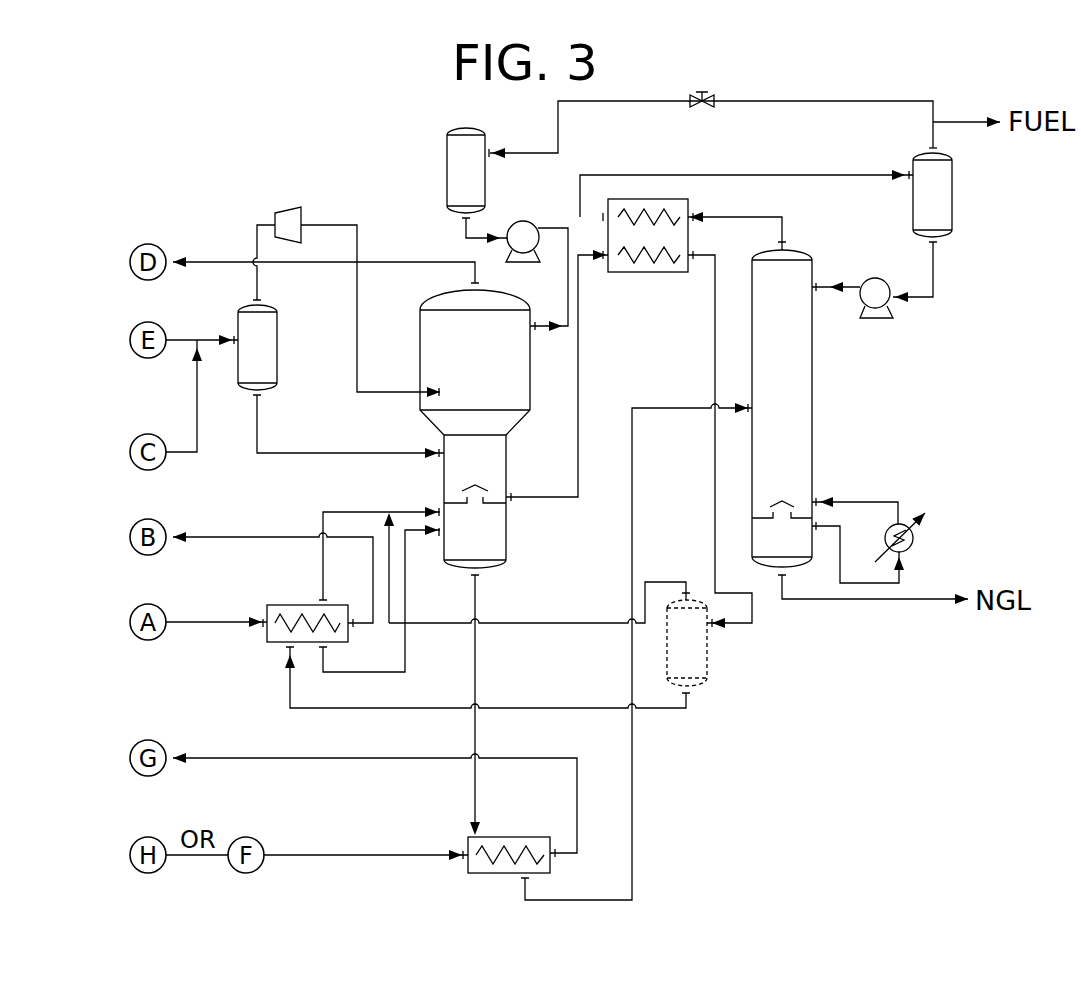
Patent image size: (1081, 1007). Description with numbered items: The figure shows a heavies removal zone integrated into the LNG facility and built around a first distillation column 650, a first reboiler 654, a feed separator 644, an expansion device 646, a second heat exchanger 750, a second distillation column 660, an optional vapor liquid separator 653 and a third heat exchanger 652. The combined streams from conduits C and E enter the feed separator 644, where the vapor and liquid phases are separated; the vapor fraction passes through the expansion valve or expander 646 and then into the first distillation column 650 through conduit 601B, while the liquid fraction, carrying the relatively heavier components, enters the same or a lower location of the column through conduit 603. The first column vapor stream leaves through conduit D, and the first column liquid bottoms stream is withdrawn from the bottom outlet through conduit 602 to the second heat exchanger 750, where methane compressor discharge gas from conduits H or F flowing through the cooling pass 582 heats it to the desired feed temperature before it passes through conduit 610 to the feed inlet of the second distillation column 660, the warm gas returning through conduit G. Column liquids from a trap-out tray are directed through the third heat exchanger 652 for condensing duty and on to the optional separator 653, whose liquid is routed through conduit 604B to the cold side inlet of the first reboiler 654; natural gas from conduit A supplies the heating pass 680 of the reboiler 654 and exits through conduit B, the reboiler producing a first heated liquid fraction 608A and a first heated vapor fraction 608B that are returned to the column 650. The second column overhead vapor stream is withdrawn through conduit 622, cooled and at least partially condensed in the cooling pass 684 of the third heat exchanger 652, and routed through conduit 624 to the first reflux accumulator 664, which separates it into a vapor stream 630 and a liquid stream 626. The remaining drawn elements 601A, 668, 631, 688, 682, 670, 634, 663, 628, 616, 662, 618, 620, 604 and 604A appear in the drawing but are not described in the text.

The expansion device 646 is at (275, 218).
The conduit 601B is at (330, 224).
The gas stream line 601A is at (252, 282).
The feed separator 644 is at (280, 325).
The conduit 603 is at (259, 417).
The first distillation column 650 is at (510, 424).
The conduit 602 is at (476, 588).
The accumulator vessel 668 is at (447, 165).
The fuel gas line 631 is at (822, 100).
The control valve 688 is at (705, 108).
The vapor stream 630 is at (937, 132).
The first reflux accumulator 664 is at (953, 185).
The conduit 624 is at (790, 175).
The cooling pass 684 is at (664, 215).
The heat exchanger coil 682 is at (666, 258).
The third heat exchanger 652 is at (656, 262).
The conduit 622 is at (784, 225).
The pump 670 is at (512, 260).
The pump discharge line 634 is at (558, 228).
The second distillation column 660 is at (815, 385).
The liquid stream 626 is at (937, 270).
The reflux pump 663 is at (875, 320).
The reflux return line 628 is at (852, 285).
The reboiler return line 616 is at (864, 500).
The reboiler 662 is at (918, 537).
The reboiler feed line 618 is at (905, 582).
The NGL product line 620 is at (858, 602).
The liquid stream line 604 is at (716, 499).
The optional vapor liquid separator 653 is at (710, 655).
The stream line 604A is at (518, 626).
The conduit 604B is at (518, 707).
The first heated vapor fraction 608B is at (367, 510).
The first heated liquid fraction 608A is at (407, 648).
The first reboiler 654 is at (297, 603).
The heating pass 680 is at (330, 626).
The second heat exchanger 750 is at (482, 878).
The cooling pass 582 is at (542, 858).
The conduit 610 is at (600, 903).